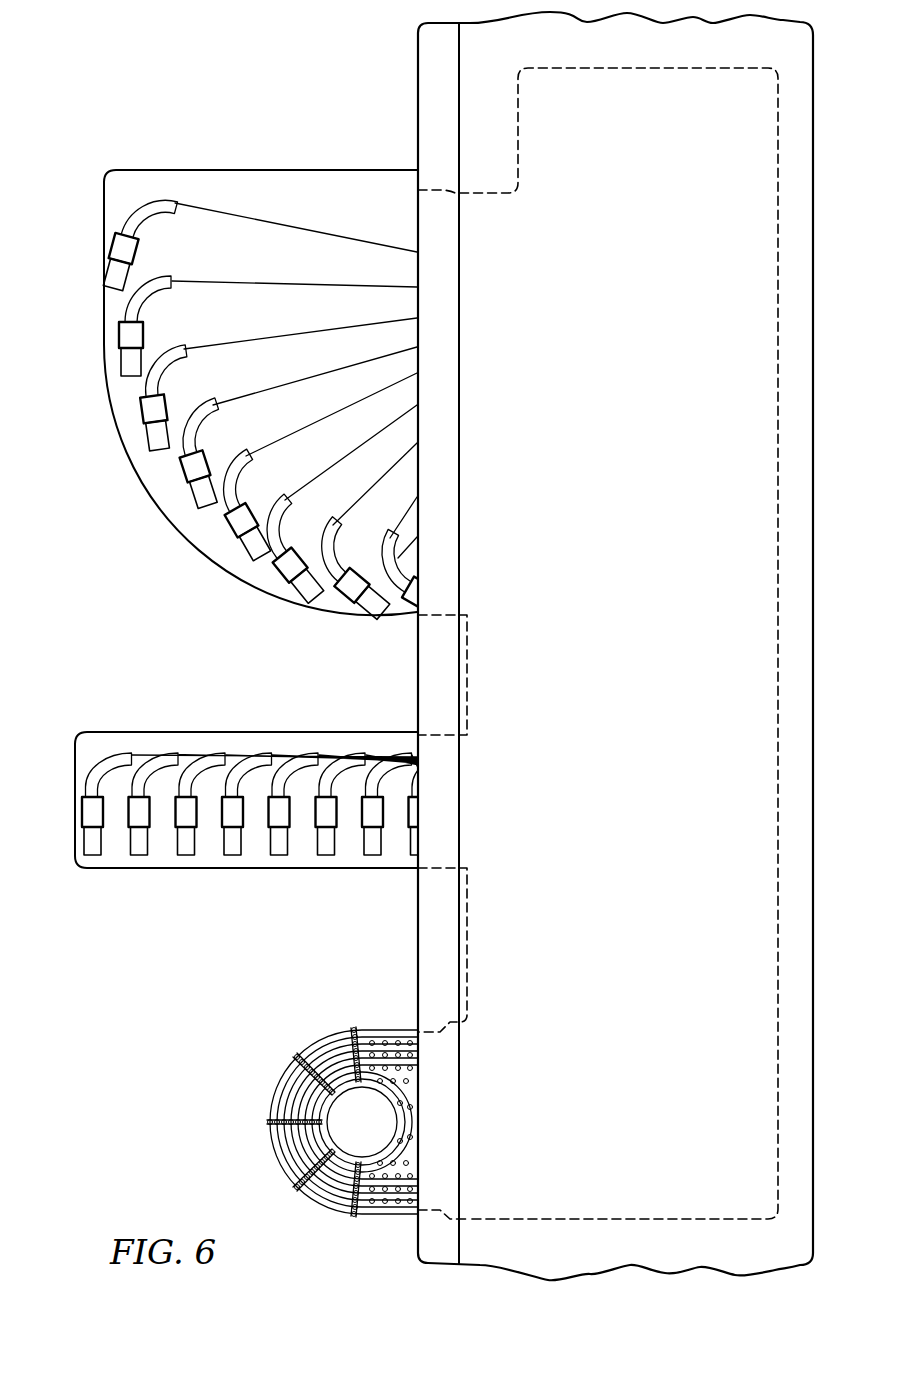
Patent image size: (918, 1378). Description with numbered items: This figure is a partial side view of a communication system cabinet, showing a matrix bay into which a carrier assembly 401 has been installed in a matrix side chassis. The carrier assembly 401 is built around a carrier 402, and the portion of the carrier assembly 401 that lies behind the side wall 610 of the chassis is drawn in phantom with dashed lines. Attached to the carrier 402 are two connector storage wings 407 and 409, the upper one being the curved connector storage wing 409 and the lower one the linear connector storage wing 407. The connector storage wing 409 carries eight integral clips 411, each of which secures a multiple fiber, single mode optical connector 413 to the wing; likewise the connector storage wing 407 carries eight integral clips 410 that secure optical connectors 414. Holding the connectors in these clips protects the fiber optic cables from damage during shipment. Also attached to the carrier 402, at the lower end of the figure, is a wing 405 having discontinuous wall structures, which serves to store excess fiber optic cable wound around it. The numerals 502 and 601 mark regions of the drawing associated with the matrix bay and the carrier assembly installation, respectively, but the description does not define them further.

The curved transducer array assembly 502 is at (320, 88).
The connector storage wing 409 is at (256, 170).
The integral clips 411 is at (142, 408).
The optical connectors 413 is at (148, 447).
The carrier assembly 401 is at (292, 652).
The connector storage wing 407 is at (237, 732).
The integral clips 410 is at (82, 808).
The optical connectors 414 is at (92, 848).
The carrier 402 is at (578, 68).
The side wall 610 is at (664, 703).
The coil assembly 601 is at (290, 975).
The wing 405 is at (272, 1150).